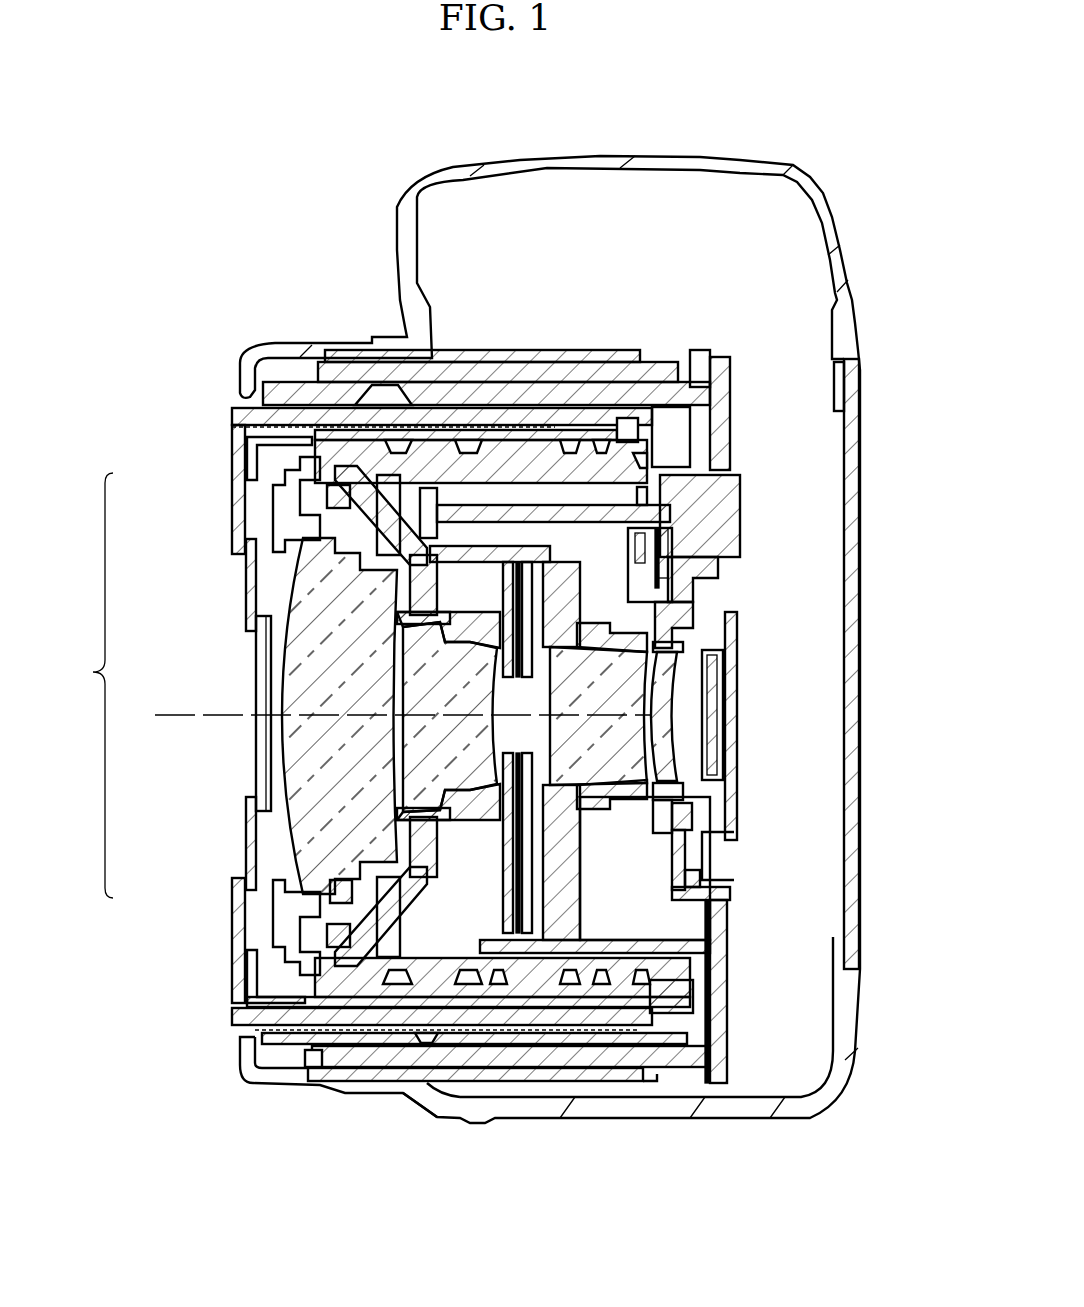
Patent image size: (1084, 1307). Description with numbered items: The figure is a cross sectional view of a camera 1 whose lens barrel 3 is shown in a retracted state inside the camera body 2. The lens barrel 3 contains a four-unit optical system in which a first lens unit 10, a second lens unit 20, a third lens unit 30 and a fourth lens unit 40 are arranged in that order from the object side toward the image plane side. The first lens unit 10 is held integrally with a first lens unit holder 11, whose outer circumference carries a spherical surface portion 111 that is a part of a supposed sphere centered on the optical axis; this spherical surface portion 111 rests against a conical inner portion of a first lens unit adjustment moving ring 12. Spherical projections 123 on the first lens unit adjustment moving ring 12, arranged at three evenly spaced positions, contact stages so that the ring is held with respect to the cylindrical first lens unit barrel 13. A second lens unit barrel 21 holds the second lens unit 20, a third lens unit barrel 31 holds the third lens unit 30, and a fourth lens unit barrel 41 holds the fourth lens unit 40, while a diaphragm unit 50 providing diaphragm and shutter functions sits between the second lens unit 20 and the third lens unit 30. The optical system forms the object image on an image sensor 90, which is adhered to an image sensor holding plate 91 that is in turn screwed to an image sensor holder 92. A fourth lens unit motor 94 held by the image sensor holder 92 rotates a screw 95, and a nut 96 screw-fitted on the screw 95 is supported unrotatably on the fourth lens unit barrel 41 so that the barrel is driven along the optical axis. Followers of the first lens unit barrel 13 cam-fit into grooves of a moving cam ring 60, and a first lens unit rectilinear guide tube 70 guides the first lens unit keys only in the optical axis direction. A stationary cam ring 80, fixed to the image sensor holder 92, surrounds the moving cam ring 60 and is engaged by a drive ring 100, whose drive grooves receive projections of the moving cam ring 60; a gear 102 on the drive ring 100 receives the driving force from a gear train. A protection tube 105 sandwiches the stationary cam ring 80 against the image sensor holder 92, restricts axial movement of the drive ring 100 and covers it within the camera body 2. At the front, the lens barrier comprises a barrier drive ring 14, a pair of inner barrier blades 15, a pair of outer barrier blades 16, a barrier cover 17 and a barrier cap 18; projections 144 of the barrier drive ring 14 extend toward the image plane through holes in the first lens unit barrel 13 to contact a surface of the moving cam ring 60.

The camera 1 is at (268, 192).
The camera body 2 is at (640, 160).
The lens barrel 3 is at (91, 685).
The first lens unit 10 is at (305, 545).
The first lens unit holder 11 is at (245, 1077).
The first lens unit adjustment moving ring 12 is at (308, 1020).
The first lens unit barrel 13 is at (407, 387).
The barrier drive ring 14 is at (272, 495).
The inner barrier blades 15 is at (258, 767).
The outer barrier blades 16 is at (242, 604).
The barrier cover 17 is at (227, 909).
The barrier cap 18 is at (230, 983).
The second lens unit 20 is at (448, 790).
The second lens unit barrel 21 is at (440, 1000).
The third lens unit 30 is at (630, 690).
The third lens unit barrel 31 is at (730, 1013).
The fourth lens unit 40 is at (663, 757).
The fourth lens unit barrel 41 is at (690, 607).
The diaphragm unit 50 is at (575, 1060).
The moving cam ring 60 is at (730, 433).
The first lens unit rectilinear guide tube 70 is at (237, 1025).
The stationary cam ring 80 is at (697, 395).
The image sensor 90 is at (730, 637).
The image sensor holding plate 91 is at (713, 813).
The image sensor holder 92 is at (720, 923).
The fourth lens unit motor 94 is at (730, 532).
The screw 95 is at (432, 495).
The nut 96 is at (745, 493).
The drive ring 100 is at (663, 367).
The gear 102 is at (673, 1077).
The protection tube 105 is at (620, 347).
The spherical surface portion 111 is at (430, 1100).
The spherical projections 123 is at (330, 903).
The projections 144 is at (372, 880).